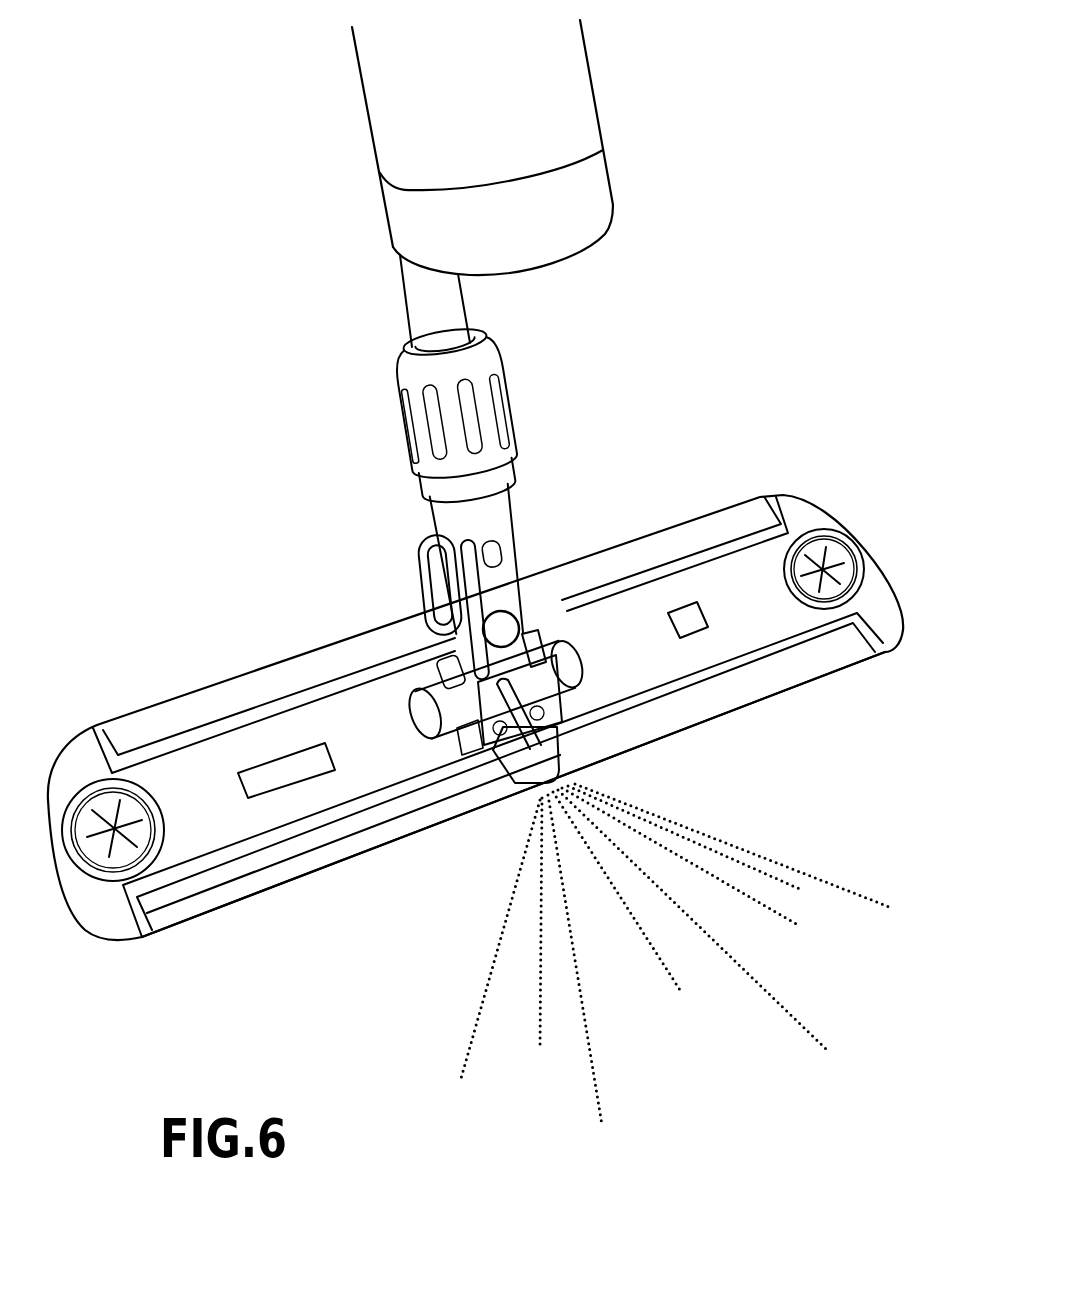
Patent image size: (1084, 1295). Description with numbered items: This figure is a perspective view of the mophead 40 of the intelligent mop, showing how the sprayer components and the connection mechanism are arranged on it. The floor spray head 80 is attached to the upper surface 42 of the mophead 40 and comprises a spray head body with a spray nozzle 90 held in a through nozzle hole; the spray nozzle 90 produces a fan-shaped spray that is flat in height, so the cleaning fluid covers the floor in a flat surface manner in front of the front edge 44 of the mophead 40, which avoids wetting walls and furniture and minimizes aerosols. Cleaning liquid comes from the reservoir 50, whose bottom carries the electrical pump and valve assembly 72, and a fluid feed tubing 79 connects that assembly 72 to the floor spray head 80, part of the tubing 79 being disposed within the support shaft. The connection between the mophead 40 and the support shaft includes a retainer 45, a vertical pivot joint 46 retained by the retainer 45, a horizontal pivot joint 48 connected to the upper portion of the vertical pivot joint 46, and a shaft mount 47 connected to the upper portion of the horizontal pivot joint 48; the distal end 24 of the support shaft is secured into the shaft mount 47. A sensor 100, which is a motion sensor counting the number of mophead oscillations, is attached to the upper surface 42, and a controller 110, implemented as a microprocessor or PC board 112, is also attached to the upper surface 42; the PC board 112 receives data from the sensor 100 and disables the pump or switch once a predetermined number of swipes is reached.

The distal end 24 is at (422, 305).
The mophead 40 is at (502, 703).
The upper surface 42 is at (770, 580).
The front edge 44 is at (800, 690).
The retainer 45 is at (417, 737).
The vertical pivot joint 46 is at (427, 637).
The shaft mount 47 is at (510, 417).
The horizontal pivot joint 48 is at (517, 570).
The reservoir 50 is at (593, 93).
The electrical pump and valve assembly 72 is at (597, 210).
The fluid feed tubing 79 is at (397, 520).
The floor spray head 80 is at (560, 753).
The spray nozzle 90 is at (500, 760).
The sensor 100 is at (688, 607).
The controller 110 is at (242, 868).
The PC board 112 is at (267, 787).